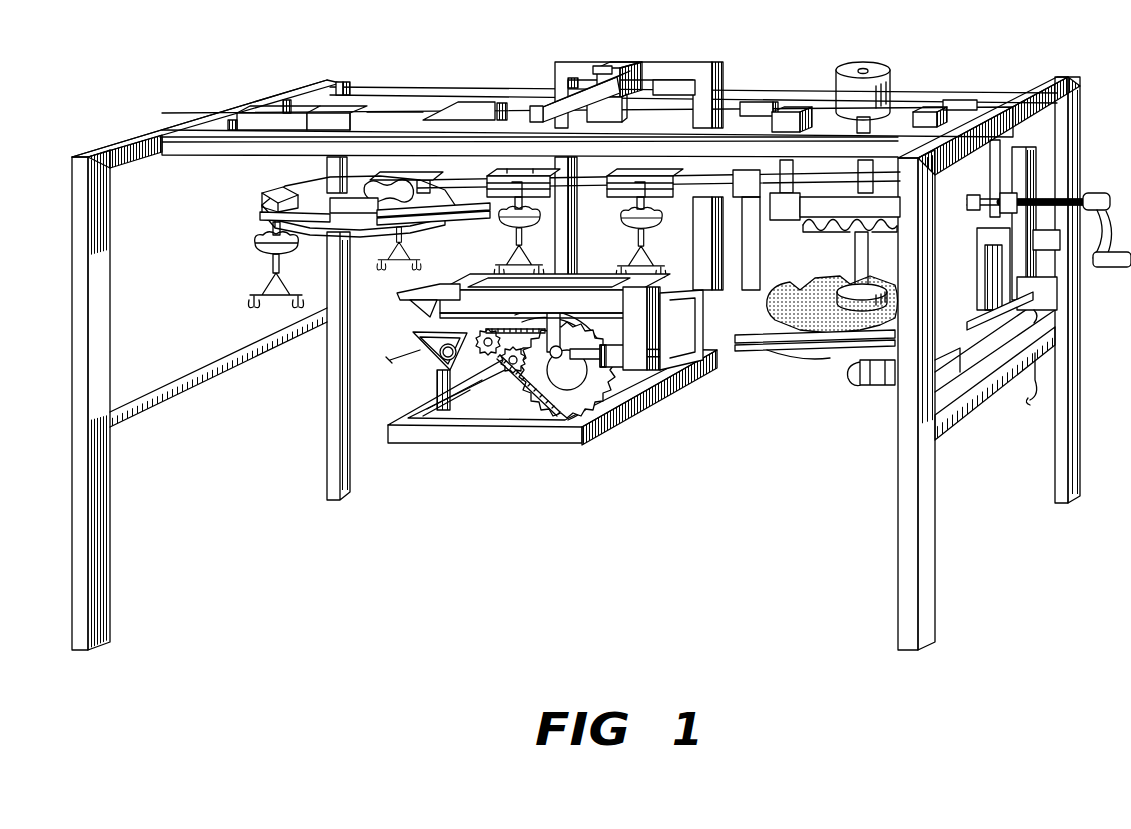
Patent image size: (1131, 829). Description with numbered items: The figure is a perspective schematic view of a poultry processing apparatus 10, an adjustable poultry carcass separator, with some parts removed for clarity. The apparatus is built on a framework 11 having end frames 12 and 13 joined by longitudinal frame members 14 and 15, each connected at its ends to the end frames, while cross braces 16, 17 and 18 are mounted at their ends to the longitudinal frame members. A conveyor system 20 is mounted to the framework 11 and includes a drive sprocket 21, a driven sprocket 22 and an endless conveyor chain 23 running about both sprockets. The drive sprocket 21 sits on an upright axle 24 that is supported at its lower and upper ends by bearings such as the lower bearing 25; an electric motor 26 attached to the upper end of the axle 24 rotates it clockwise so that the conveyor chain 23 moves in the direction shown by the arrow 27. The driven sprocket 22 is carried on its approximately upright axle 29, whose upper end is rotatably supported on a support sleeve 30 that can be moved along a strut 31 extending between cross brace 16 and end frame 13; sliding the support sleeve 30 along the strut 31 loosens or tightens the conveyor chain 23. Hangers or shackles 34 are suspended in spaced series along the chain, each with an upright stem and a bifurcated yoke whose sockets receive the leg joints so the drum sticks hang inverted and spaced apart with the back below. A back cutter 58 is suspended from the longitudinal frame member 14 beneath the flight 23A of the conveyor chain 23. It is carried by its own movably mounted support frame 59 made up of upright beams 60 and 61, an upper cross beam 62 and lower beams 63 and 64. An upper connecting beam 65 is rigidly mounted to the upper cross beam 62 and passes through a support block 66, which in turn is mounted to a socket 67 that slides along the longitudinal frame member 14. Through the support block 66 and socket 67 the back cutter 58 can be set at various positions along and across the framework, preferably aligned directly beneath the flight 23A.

The poultry processing apparatus 10 is at (184, 54).
The framework 11 is at (1082, 98).
The end frame 12 is at (1055, 432).
The end frame 13 is at (80, 390).
The longitudinal frame member 14 is at (407, 97).
The longitudinal frame member 15 is at (207, 150).
The cross brace 16 is at (473, 107).
The cross brace 17 is at (815, 103).
The cross brace 18 is at (950, 105).
The conveyor system 20 is at (248, 234).
The drive sprocket 21 is at (827, 220).
The driven sprocket 22 is at (320, 201).
The endless conveyor chain 23 is at (265, 192).
The flight of the conveyor chain 23A is at (488, 198).
The upright axle 24 is at (857, 247).
The lower bearing 25 is at (863, 385).
The electric motor 26 is at (880, 72).
The arrow 27 is at (614, 217).
The upright axle 29 is at (328, 165).
The support sleeve 30 is at (337, 107).
The strut 31 is at (300, 112).
The hanger 34 is at (393, 262).
The back cutter 58 is at (551, 375).
The support frame 59 is at (664, 46).
The upright beam 60 is at (723, 78).
The upright beam 61 is at (561, 253).
The upper cross beam 62 is at (624, 60).
The lower beam 63 is at (663, 390).
The lower beam 64 is at (477, 441).
The upper connecting beam 65 is at (548, 102).
The support block 66 is at (613, 67).
The socket 67 is at (604, 110).